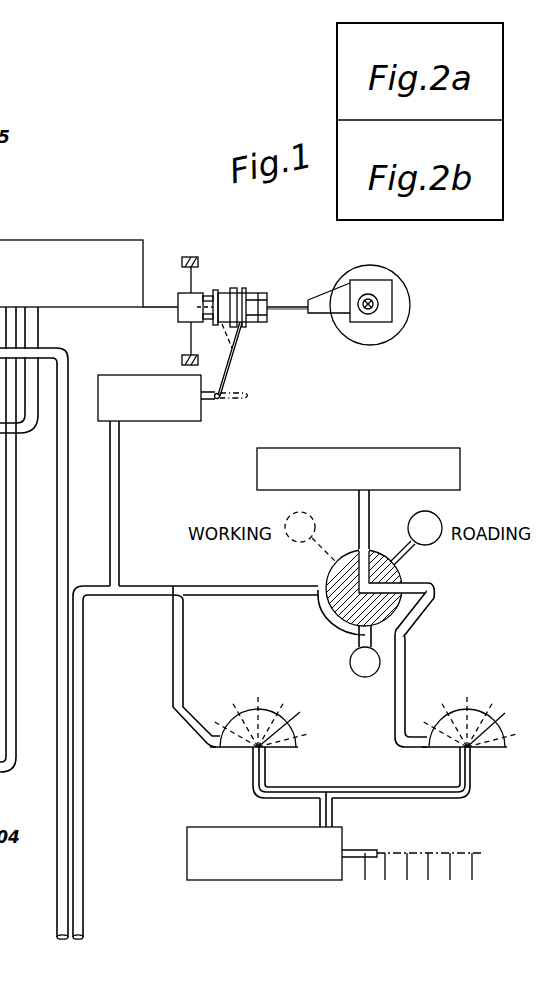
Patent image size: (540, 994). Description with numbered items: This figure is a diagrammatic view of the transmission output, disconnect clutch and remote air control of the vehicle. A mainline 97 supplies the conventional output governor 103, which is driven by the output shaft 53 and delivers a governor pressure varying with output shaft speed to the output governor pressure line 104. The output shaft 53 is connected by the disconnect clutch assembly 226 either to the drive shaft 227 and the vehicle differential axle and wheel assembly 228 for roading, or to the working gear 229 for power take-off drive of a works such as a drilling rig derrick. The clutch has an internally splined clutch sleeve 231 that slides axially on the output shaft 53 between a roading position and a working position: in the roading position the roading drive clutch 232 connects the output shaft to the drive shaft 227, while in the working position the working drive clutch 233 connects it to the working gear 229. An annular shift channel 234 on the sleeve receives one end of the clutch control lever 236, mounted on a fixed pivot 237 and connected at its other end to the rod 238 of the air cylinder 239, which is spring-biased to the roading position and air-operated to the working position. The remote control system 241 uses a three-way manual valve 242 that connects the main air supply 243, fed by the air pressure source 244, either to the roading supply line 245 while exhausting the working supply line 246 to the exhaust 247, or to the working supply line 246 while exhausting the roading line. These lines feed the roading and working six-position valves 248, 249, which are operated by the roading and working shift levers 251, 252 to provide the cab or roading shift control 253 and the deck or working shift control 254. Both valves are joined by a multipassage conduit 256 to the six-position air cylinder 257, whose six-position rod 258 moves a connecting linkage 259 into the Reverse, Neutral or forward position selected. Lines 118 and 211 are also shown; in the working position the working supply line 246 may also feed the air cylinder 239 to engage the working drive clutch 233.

The output shaft 53 is at (153, 307).
The mainline 97 is at (14, 480).
The output governor 103 is at (115, 252).
The output governor pressure line 104 is at (32, 333).
The air line 118 is at (55, 877).
The air line 211 is at (0, 188).
The disconnect clutch assembly 226 is at (263, 331).
The drive shaft 227 is at (295, 309).
The vehicle differential axle and wheel assembly 228 is at (387, 330).
The working gear 229 is at (182, 358).
The clutch sleeve 231 is at (253, 288).
The roading drive clutch 232 is at (277, 304).
The working drive clutch 233 is at (198, 318).
The annular shift channel 234 is at (239, 290).
The clutch control lever 236 is at (240, 378).
The fixed pivot 237 is at (231, 353).
The rod 238 is at (209, 401).
The air cylinder 239 is at (147, 413).
The remote control system 241 is at (449, 602).
The 3-way manual valve 242 is at (378, 544).
The main air supply 243 is at (357, 510).
The air pressure source 244 is at (438, 448).
The roading supply line 245 is at (412, 590).
The working supply line 246 is at (230, 588).
The exhaust 247 is at (341, 624).
The roading 6-position valve 248 is at (487, 743).
The working 6-position valve 249 is at (294, 740).
The roading shift lever 251 is at (505, 713).
The working shift lever 252 is at (300, 712).
The cab or roading shift control 253 is at (511, 670).
The deck or working shift control 254 is at (275, 660).
The multipassage conduit 256 is at (352, 787).
The 6-position air cylinder 257 is at (187, 855).
The 6-position rod 258 is at (353, 853).
The connecting linkage 259 is at (465, 853).